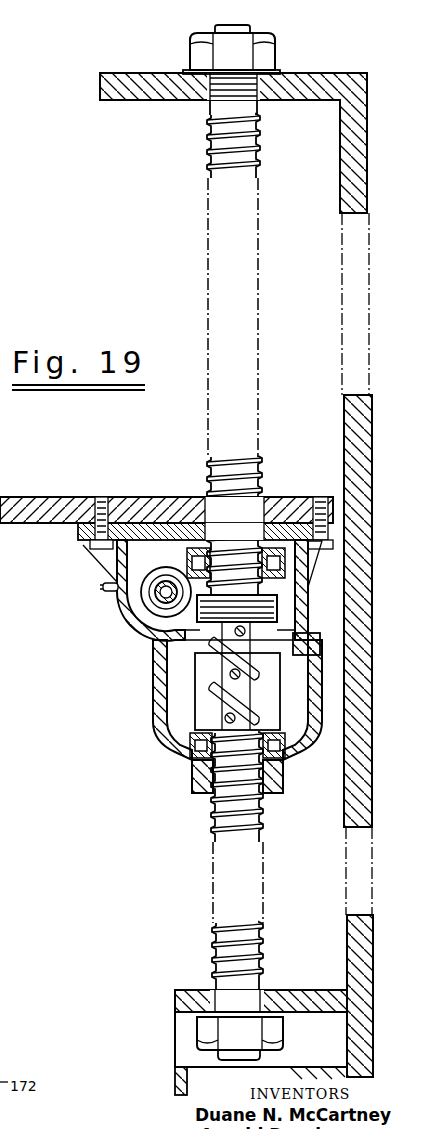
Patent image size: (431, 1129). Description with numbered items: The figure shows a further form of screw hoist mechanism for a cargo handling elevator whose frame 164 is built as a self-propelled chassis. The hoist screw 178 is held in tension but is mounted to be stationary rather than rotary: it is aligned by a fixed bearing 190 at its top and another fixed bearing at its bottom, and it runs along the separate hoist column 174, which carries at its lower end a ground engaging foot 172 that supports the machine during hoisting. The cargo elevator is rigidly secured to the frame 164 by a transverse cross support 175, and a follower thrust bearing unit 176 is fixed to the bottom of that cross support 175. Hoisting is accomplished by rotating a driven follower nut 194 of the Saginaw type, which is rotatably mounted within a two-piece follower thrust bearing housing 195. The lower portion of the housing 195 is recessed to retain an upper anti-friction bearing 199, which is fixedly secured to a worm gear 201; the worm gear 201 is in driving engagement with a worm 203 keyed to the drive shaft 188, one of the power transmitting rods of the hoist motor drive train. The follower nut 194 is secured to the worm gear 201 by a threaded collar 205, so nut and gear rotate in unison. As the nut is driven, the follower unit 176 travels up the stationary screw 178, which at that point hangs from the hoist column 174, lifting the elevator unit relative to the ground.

The frame 164 is at (146, 490).
The feet 172 is at (176, 1079).
The hoist column 174 is at (106, 89).
The cross support 175 is at (50, 496).
The follower thrust bearing unit 176 is at (180, 803).
The hoist screw 178 is at (210, 157).
The drive shaft 188 is at (152, 622).
The fixed bearing 190 is at (276, 60).
The follower nut 194 is at (196, 690).
The follower thrust bearing housing unit 195 is at (162, 735).
The upper anti-friction bearing 199 is at (298, 497).
The worm gear 201 is at (285, 601).
The worm 203 is at (148, 597).
The threaded collar 205 is at (305, 608).